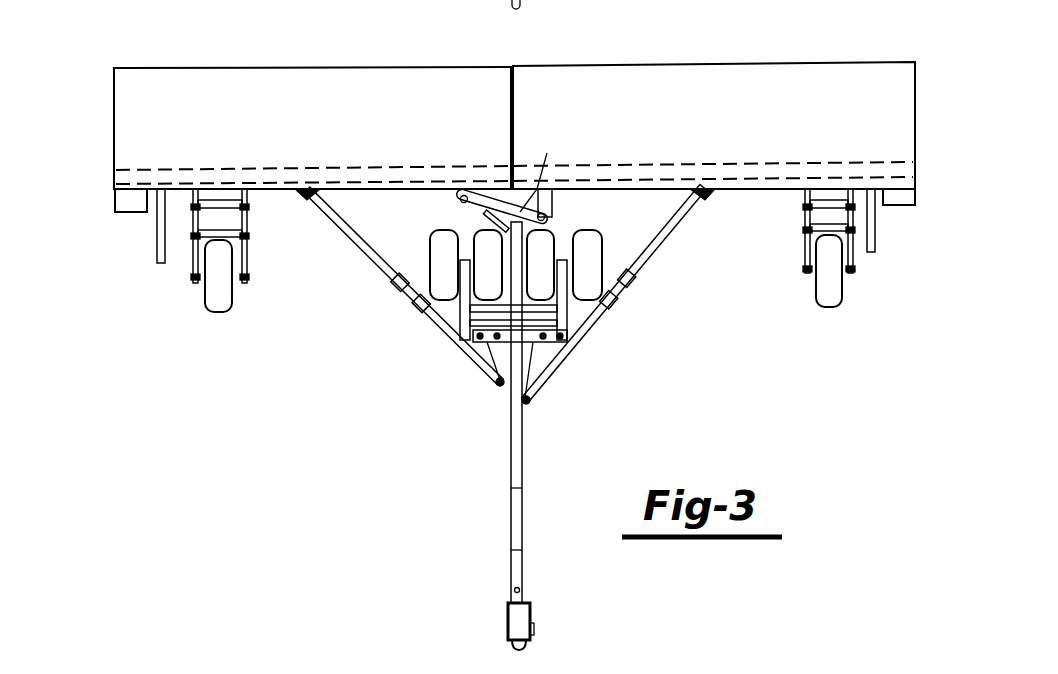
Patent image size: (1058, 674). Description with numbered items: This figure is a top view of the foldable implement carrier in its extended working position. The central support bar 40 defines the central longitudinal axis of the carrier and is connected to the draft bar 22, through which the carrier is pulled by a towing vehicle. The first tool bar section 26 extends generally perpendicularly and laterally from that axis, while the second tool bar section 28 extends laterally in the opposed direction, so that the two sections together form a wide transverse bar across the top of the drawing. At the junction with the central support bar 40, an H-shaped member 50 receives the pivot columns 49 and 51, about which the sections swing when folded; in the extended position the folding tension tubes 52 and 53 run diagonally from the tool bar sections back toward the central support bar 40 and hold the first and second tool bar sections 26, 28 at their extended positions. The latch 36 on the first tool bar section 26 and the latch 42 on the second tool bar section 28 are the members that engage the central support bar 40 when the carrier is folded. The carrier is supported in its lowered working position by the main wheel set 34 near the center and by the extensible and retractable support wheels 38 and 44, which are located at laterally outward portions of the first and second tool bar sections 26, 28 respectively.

The draft bar 22 is at (517, 519).
The first tool bar section 26 is at (120, 115).
The second tool bar section 28 is at (643, 72).
The main wheel set 34 is at (437, 258).
The latch 36 is at (157, 247).
The support wheel 38 is at (210, 292).
The central support bar 40 is at (517, 410).
The latch 42 is at (870, 255).
The support wheel 44 is at (822, 280).
The pivot column 49 is at (457, 197).
The H-shaped member 50 is at (511, 177).
The pivot column 51 is at (550, 222).
The folding tension tube 52 is at (418, 310).
The folding tension tube 53 is at (630, 283).